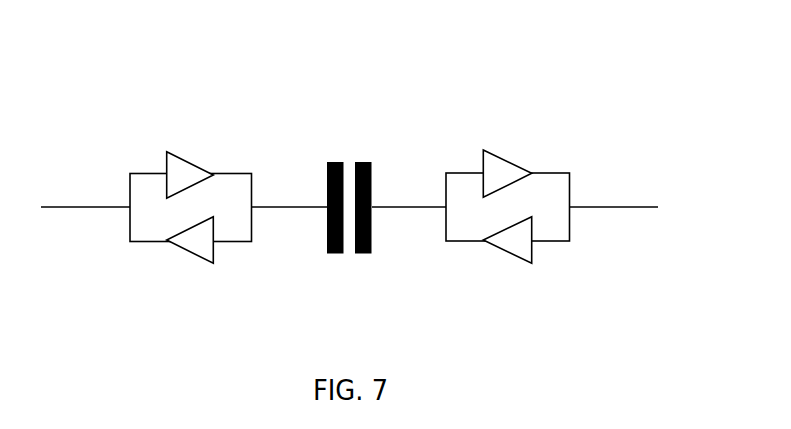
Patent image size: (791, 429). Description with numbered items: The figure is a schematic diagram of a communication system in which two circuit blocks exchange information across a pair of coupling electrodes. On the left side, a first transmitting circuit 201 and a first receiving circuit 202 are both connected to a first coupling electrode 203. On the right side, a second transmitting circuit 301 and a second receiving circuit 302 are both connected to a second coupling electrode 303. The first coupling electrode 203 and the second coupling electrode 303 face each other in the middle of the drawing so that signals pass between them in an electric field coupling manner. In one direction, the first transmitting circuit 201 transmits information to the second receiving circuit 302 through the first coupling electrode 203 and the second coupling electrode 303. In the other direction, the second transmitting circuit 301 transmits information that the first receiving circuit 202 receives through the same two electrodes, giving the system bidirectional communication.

The first transmitting circuit 201 is at (184, 157).
The first receiving circuit 202 is at (188, 255).
The first coupling electrode 203 is at (335, 161).
The second transmitting circuit 301 is at (508, 157).
The second receiving circuit 302 is at (510, 257).
The second coupling electrode 303 is at (365, 254).